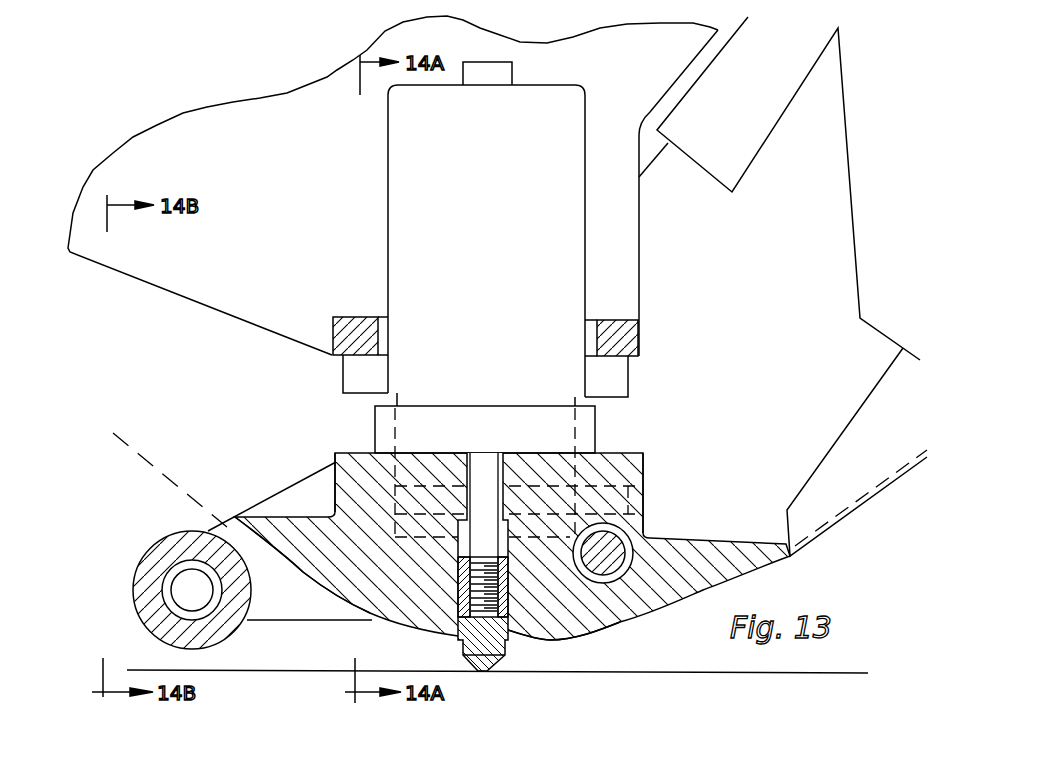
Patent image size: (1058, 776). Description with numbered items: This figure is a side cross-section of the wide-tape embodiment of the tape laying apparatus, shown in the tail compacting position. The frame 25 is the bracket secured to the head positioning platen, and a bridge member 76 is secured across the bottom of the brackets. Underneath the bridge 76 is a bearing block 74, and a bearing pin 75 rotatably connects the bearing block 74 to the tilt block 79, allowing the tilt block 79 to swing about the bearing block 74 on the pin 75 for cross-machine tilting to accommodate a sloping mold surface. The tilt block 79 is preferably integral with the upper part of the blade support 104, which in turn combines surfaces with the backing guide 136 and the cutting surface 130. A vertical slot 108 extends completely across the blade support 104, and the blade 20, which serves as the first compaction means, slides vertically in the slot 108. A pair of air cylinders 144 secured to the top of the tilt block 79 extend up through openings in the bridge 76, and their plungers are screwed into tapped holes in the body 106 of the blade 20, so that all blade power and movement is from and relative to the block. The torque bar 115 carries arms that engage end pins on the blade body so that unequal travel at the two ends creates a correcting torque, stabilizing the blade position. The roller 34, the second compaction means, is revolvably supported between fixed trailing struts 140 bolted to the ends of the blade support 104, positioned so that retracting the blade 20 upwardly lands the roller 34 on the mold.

The frame 25 is at (284, 200).
The air cylinders 144 is at (513, 206).
The bridge member 76 is at (638, 330).
The bearing block 74 is at (580, 427).
The tilt block 79 is at (510, 544).
The bearing pin 75 is at (643, 502).
The vertical slot 108 is at (597, 482).
The trailing struts 140 is at (306, 478).
The roller 34 is at (176, 531).
The blade support 104 is at (398, 581).
The backing guide 136 is at (330, 595).
The cutting surface 130 is at (760, 565).
The torque bar 115 is at (603, 570).
The blade body 106 is at (527, 640).
The blade 20 is at (500, 663).